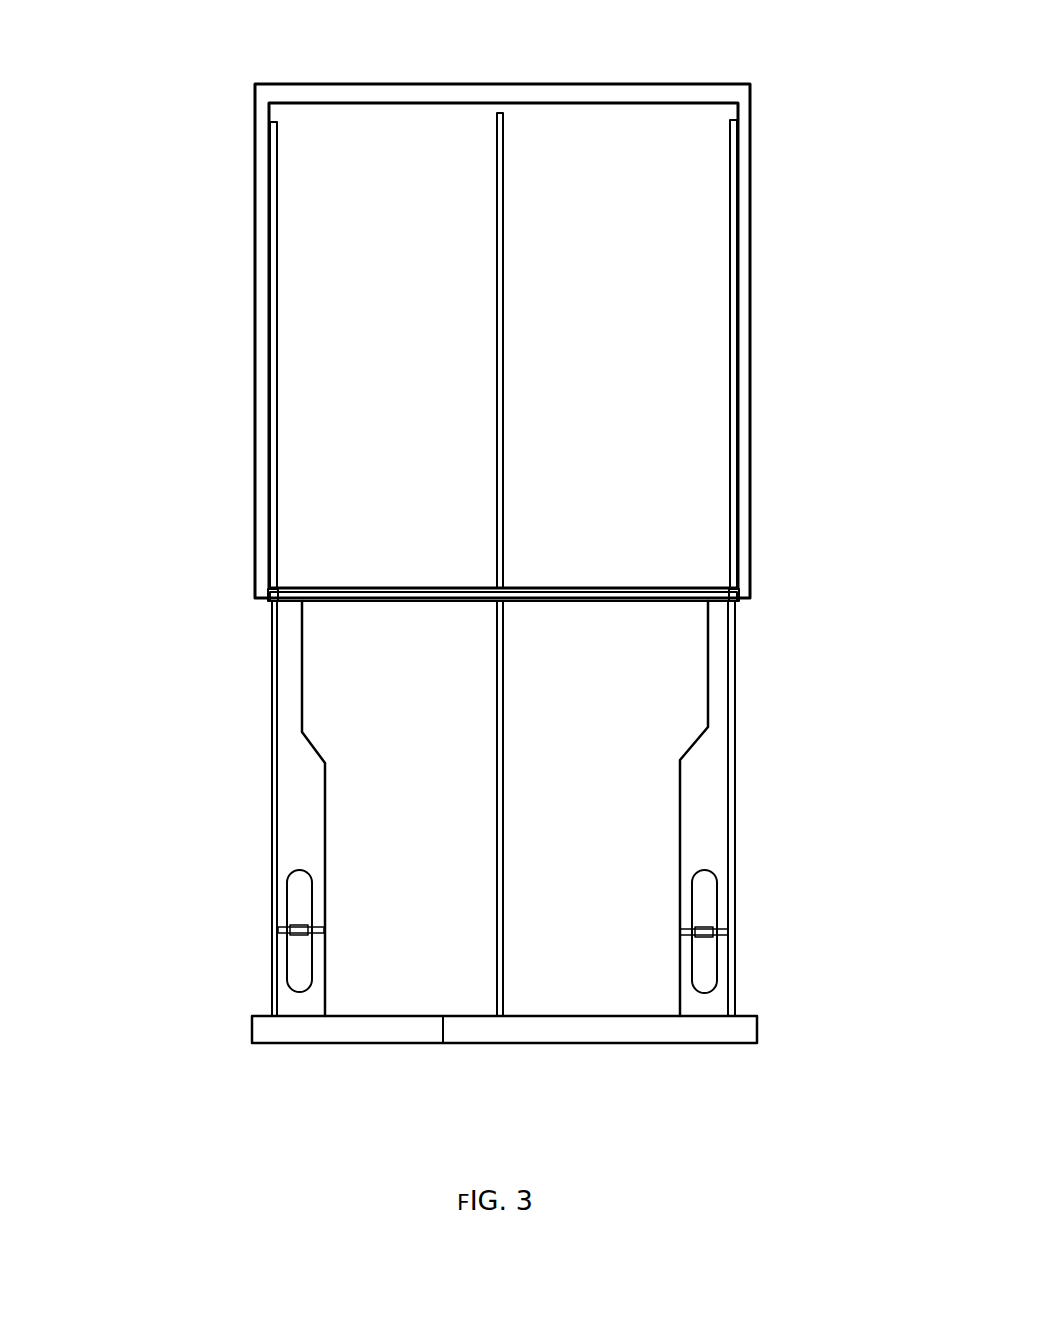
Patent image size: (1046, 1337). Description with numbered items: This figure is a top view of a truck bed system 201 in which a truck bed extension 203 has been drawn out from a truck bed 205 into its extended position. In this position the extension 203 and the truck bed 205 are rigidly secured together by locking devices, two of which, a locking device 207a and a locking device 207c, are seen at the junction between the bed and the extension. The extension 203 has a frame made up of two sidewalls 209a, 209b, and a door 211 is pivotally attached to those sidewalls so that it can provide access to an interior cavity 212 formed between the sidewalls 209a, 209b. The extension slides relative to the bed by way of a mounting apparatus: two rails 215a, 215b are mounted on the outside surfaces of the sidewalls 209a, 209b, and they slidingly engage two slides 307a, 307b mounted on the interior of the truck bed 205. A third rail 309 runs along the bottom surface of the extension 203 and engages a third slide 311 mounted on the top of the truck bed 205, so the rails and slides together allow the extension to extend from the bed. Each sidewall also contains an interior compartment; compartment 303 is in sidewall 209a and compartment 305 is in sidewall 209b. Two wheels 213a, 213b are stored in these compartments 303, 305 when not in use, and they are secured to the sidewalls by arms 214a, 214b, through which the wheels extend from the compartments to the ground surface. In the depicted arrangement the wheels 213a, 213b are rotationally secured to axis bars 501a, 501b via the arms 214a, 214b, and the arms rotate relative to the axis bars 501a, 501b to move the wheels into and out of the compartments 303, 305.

The truck bed system 201 is at (152, 80).
The truck bed 205 is at (782, 120).
The truck bed extension 203 is at (830, 684).
The slide 307a is at (277, 336).
The slide 307b is at (730, 436).
The third slide 311 is at (496, 524).
The locking device 207a is at (269, 601).
The locking device 207c is at (738, 601).
The rail 215a is at (272, 692).
The rail 215b is at (735, 888).
The interior compartment 303 is at (303, 826).
The interior compartment 305 is at (698, 805).
The sidewall 209a is at (303, 705).
The sidewall 209b is at (708, 687).
The third rail 309 is at (503, 758).
The wheel 213a is at (287, 967).
The wheel 213b is at (717, 962).
The arm 214a is at (298, 925).
The arm 214b is at (700, 929).
The axis bar 501a is at (317, 935).
The axis bar 501b is at (684, 938).
The door 211 is at (572, 1043).
The interior cavity 212 is at (443, 1000).